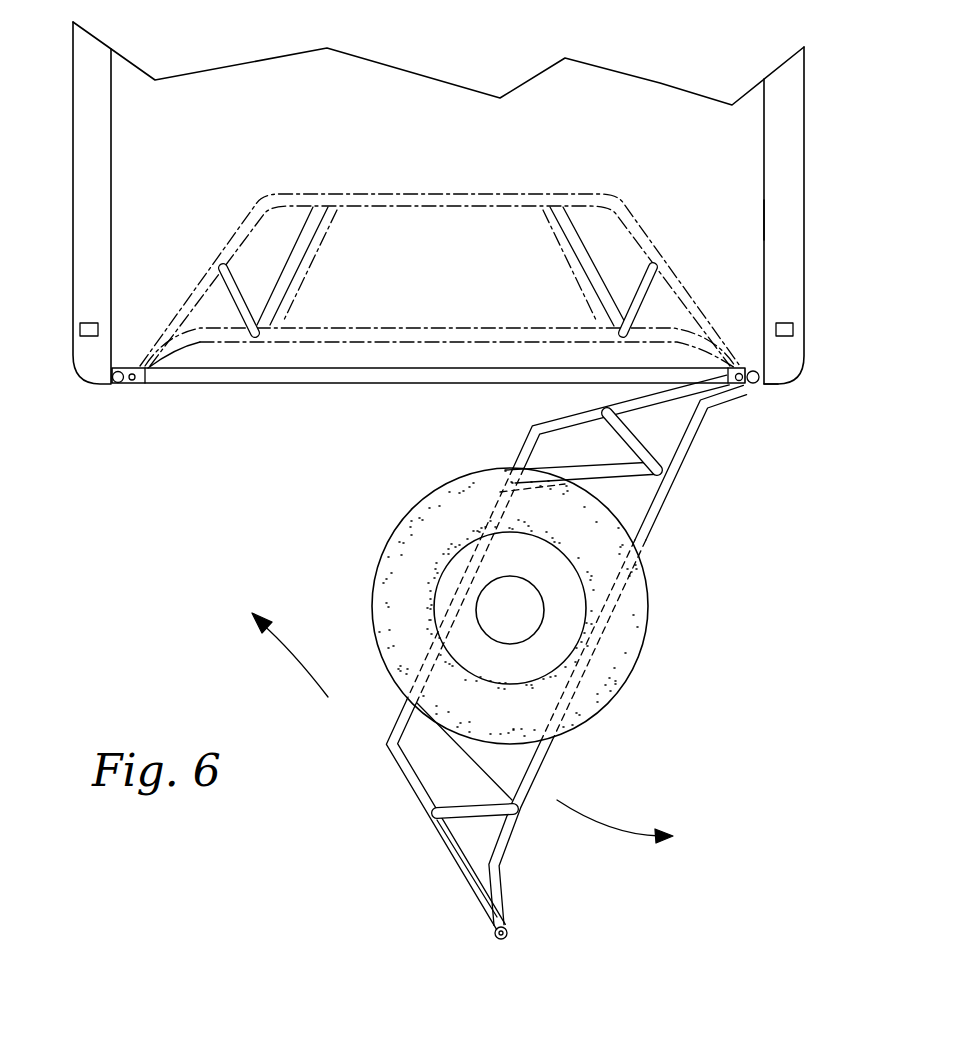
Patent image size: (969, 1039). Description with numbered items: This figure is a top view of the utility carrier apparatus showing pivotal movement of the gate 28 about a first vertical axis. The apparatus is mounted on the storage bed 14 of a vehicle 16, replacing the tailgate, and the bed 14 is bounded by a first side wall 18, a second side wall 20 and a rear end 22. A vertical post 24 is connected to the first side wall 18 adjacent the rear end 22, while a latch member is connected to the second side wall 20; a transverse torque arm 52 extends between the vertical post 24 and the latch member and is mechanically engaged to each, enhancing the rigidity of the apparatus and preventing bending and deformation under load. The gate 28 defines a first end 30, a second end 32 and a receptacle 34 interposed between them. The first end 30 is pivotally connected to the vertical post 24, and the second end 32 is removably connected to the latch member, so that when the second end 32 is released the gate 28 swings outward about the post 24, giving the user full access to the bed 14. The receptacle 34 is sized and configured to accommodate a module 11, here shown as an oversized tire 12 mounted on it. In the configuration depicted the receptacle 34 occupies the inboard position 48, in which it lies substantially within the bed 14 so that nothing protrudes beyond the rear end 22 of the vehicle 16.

The module 11 is at (432, 555).
The tire 12 is at (427, 580).
The storage bed 14 is at (735, 151).
The vehicle 16 is at (805, 98).
The first side wall 18 is at (764, 226).
The second side wall 20 is at (113, 228).
The rear end 22 is at (786, 383).
The vertical post 24 is at (758, 386).
The gate 28 is at (652, 492).
The first end 30 is at (707, 397).
The second end 32 is at (497, 890).
The receptacle 34 is at (656, 186).
The inboard position 48 is at (128, 396).
The transverse torque arm 52 is at (320, 383).